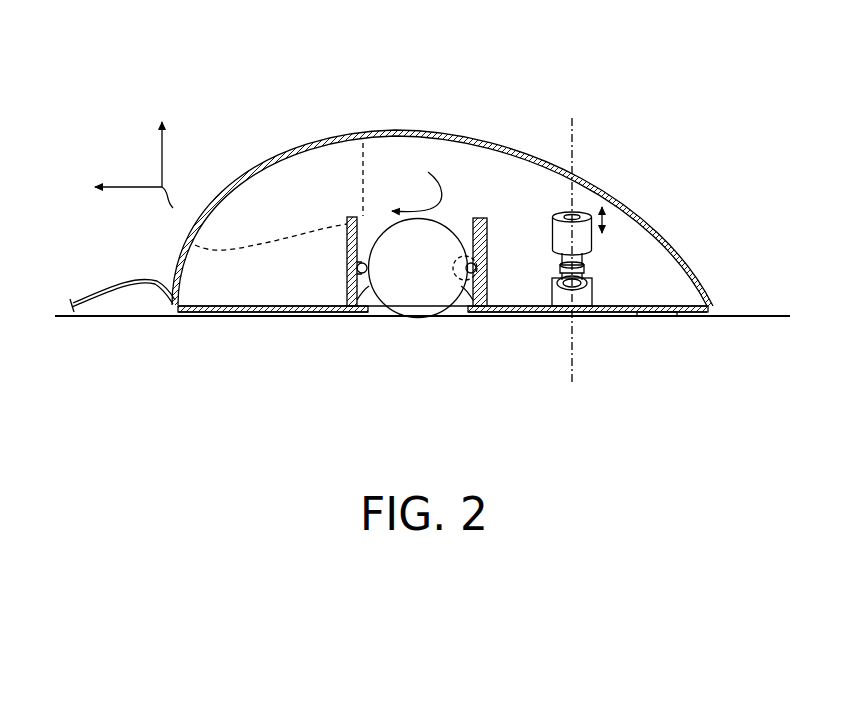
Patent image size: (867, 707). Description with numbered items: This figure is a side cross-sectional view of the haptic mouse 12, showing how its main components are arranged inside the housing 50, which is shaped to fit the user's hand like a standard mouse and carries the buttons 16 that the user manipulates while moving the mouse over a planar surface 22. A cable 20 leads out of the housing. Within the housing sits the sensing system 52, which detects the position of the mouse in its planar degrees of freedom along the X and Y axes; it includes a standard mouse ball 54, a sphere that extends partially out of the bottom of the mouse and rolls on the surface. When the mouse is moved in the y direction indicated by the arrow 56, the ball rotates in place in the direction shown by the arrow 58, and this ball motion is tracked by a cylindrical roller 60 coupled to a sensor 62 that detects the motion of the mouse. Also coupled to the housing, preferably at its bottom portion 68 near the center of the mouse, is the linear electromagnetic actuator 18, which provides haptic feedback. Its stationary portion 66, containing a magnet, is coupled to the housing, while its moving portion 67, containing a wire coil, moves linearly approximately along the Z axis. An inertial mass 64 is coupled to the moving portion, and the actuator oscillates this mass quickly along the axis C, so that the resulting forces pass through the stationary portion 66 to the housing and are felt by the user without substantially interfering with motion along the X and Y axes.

The mouse 12 is at (231, 47).
The buttons 16 is at (300, 178).
The actuator 18 is at (610, 248).
The cable 20 is at (113, 282).
The planar surface 22 is at (762, 312).
The housing 50 is at (432, 138).
The sensing system 52 is at (391, 328).
The mouse ball 54 is at (418, 316).
The arrow 56 is at (132, 187).
The arrow 58 is at (417, 184).
The cylindrical roller 60 is at (470, 266).
The sensor 62 is at (503, 228).
The inertial mass 64 is at (557, 242).
The stationary portion 66 is at (592, 300).
The moving portion 67 is at (582, 265).
The bottom portion 68 is at (255, 312).